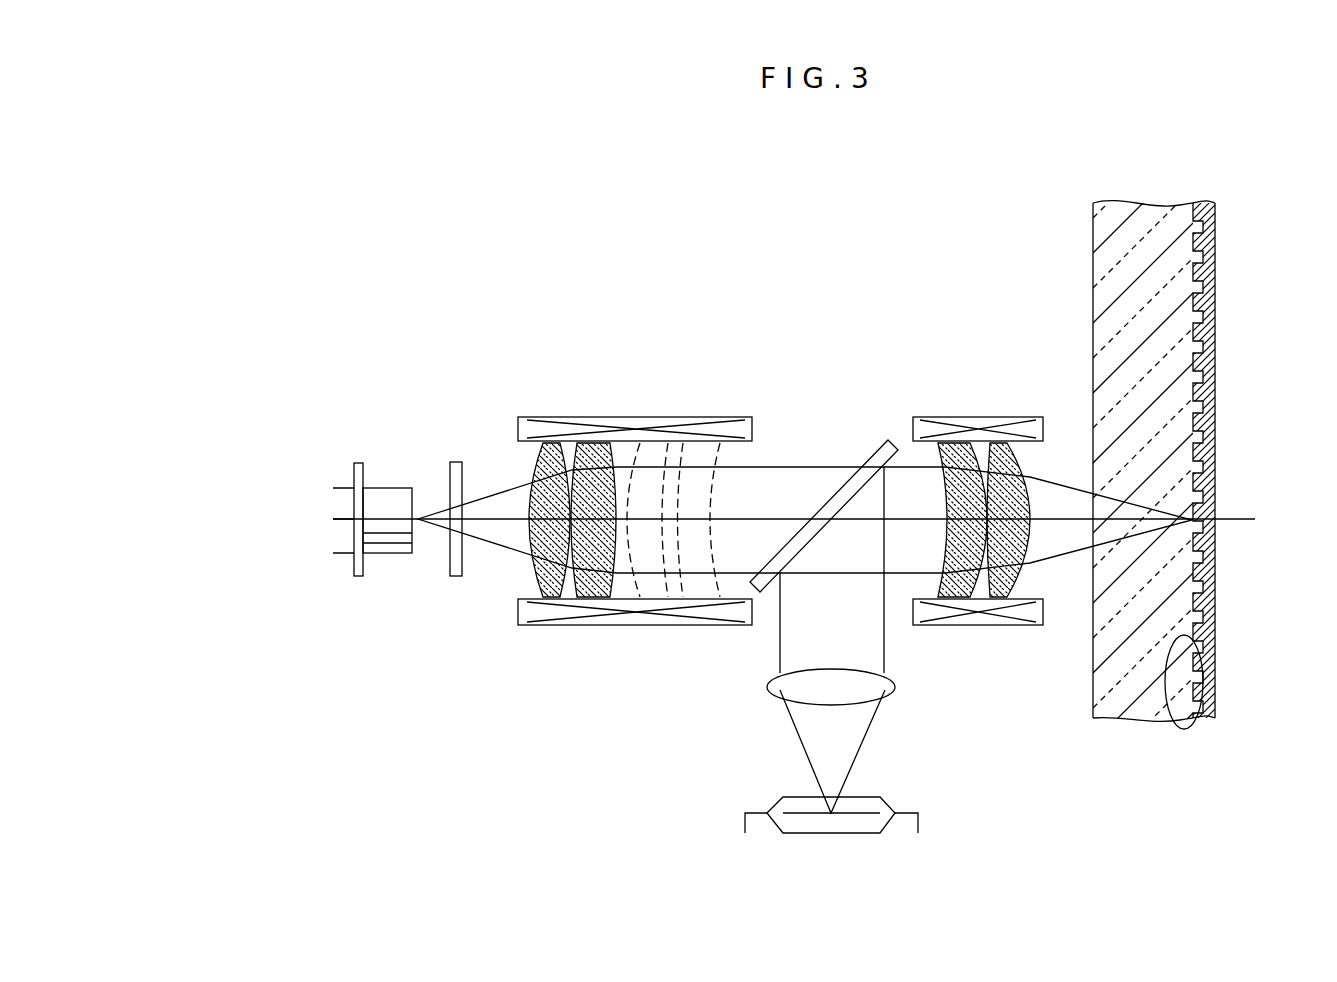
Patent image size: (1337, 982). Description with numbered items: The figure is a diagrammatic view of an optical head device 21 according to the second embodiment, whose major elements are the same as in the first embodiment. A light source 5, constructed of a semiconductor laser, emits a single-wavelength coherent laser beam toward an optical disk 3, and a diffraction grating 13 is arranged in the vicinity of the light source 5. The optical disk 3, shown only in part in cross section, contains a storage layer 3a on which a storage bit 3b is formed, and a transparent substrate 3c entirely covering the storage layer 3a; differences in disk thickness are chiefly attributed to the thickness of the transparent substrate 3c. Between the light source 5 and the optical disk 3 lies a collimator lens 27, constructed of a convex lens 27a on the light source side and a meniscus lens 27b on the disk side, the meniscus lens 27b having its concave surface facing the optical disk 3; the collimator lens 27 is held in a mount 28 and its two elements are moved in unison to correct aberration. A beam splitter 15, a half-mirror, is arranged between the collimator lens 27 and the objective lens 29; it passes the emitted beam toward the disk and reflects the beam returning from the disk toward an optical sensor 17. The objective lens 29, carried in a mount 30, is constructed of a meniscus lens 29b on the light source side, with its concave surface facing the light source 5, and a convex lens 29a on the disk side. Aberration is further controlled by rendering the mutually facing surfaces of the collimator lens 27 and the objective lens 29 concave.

The optical head device 21 is at (320, 235).
The light source 5 is at (387, 555).
The diffraction grating 13 is at (458, 577).
The collimator lens 27 is at (580, 393).
The convex lens 27a is at (548, 445).
The meniscus lens 27b is at (598, 445).
The collimator lens barrel 28 is at (658, 626).
The beam splitter 15 is at (872, 442).
The objective lens 29 is at (953, 393).
The convex lens 29a is at (1005, 445).
The meniscus lens 29b is at (948, 445).
The objective lens barrel 30 is at (1008, 626).
The optical sensor 17 is at (805, 833).
The optical disk 3 is at (1161, 453).
The storage layer 3a is at (1208, 720).
The storage bit 3b is at (1167, 729).
The transparent substrate 3c is at (1108, 707).